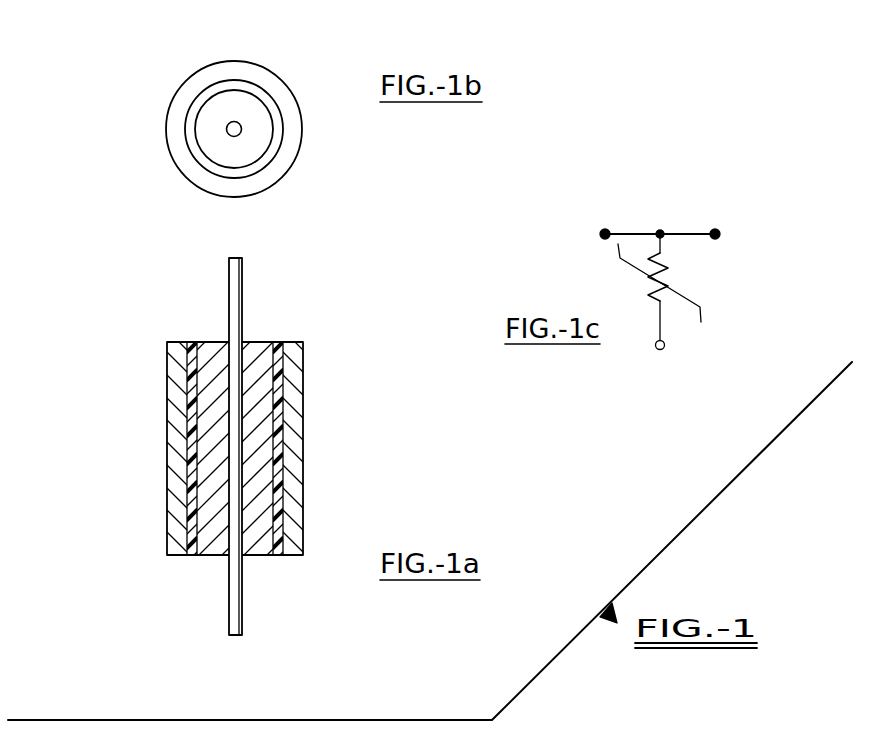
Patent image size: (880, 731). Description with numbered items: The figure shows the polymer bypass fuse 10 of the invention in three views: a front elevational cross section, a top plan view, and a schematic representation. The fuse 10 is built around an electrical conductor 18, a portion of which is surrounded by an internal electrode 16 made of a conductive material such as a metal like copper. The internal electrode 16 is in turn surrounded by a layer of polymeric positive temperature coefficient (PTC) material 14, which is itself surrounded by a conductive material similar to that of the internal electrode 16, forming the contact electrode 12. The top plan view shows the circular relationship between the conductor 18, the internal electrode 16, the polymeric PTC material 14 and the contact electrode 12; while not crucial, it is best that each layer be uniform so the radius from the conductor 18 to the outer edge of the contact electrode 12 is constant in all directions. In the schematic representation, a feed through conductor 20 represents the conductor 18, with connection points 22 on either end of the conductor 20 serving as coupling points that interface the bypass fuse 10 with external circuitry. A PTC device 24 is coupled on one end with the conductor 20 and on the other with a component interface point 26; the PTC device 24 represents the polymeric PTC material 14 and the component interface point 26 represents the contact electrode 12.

In FIG. 1B, the polymer bypass fuse 10 is at (199, 114).
In FIG. 1A, the polymer bypass fuse 10 is at (199, 446).
In FIG. 1C, the polymer bypass fuse 10 is at (672, 248).
In FIG. 1B, the contact electrode 12 is at (246, 70).
In FIG. 1A, the contact electrode 12 is at (297, 373).
In FIG. 1B, the polymeric positive temperature coefficient (PTC) material 14 is at (192, 137).
In FIG. 1A, the polymeric positive temperature coefficient (PTC) material 14 is at (187, 383).
In FIG. 1B, the internal electrode 16 is at (220, 153).
In FIG. 1A, the internal electrode 16 is at (253, 345).
In FIG. 1B, the electrical conductor 18 is at (237, 133).
In FIG. 1A, the electrical conductor 18 is at (229, 288).
In FIG. 1C, the electrical conductor 18 is at (674, 232).
In FIG. 1C, the feed through conductor 20 is at (642, 226).
In FIG. 1C, the connection points 22 is at (605, 232).
In FIG. 1C, the PTC device 24 is at (667, 272).
In FIG. 1C, the component interface point 26 is at (665, 345).